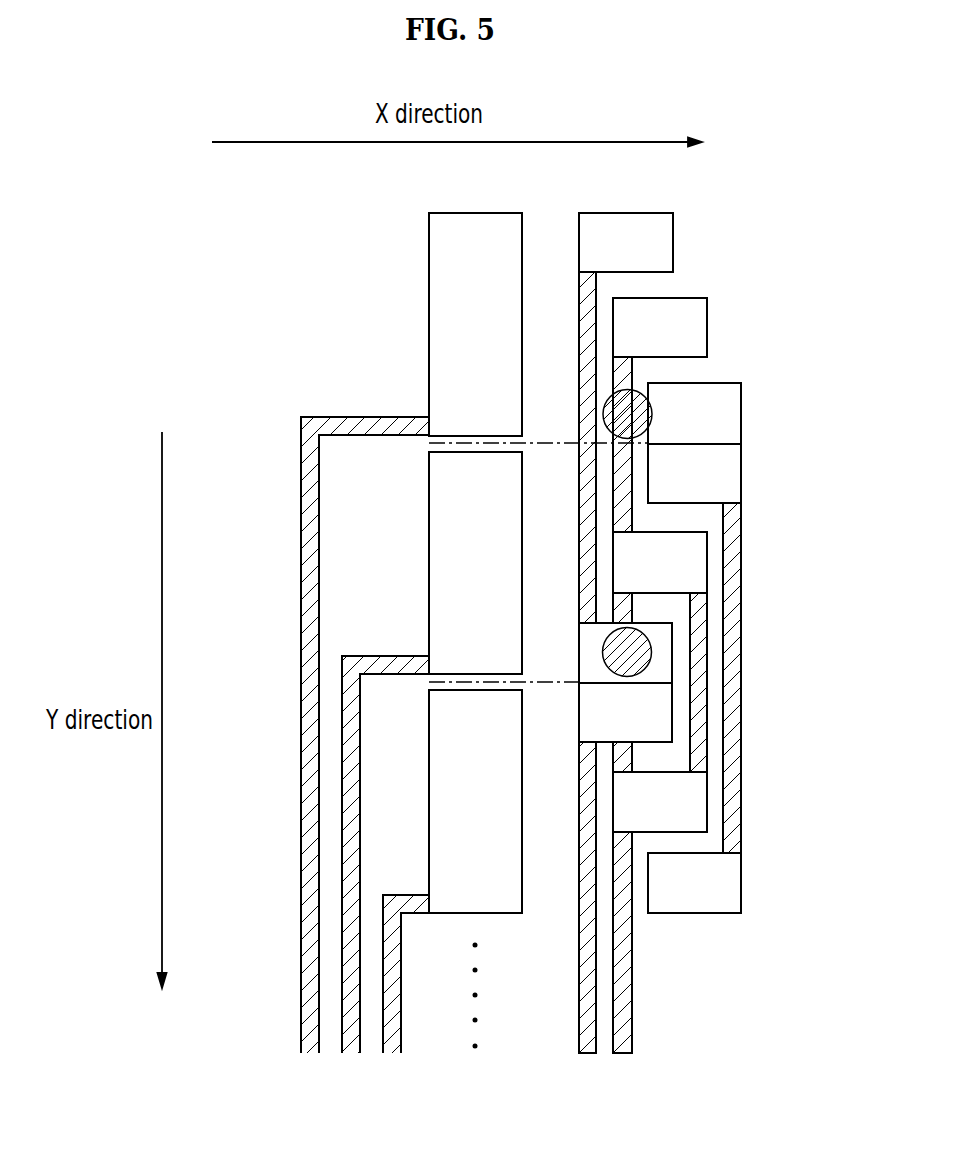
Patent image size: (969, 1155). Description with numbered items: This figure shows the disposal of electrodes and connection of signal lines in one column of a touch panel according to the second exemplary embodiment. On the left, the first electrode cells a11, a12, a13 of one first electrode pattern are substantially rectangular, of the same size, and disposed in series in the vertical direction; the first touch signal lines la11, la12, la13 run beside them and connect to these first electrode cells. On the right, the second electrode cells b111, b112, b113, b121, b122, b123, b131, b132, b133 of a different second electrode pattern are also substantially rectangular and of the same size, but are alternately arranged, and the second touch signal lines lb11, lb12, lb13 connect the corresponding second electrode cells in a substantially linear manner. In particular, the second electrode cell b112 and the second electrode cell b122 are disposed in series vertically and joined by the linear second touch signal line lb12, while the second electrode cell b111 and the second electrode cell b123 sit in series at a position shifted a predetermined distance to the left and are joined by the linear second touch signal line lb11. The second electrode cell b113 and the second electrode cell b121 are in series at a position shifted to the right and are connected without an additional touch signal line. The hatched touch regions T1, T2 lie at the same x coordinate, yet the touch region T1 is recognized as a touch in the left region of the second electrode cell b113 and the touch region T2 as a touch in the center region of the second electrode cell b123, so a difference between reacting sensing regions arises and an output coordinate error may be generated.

The first electrode cell a11 is at (475, 324).
The first electrode cell a12 is at (475, 563).
The first electrode cell a13 is at (475, 801).
The first touch signal line la11 is at (307, 667).
The first touch signal line la12 is at (348, 808).
The first touch signal line la13 is at (390, 1000).
The second electrode cell b111 is at (626, 242).
The second electrode cell b112 is at (660, 327).
The second electrode cell b113 is at (728, 428).
The second electrode cell b121 is at (694, 473).
The second electrode cell b122 is at (660, 562).
The second electrode cell b123 is at (663, 632).
The second electrode cell b131 is at (625, 712).
The second electrode cell b132 is at (660, 802).
The second electrode cell b133 is at (694, 883).
The second touch signal line lb11 is at (596, 286).
The second touch signal line lb12 is at (628, 374).
The second touch signal line lb13 is at (737, 643).
The touch region T1 is at (642, 416).
The touch region T2 is at (642, 655).